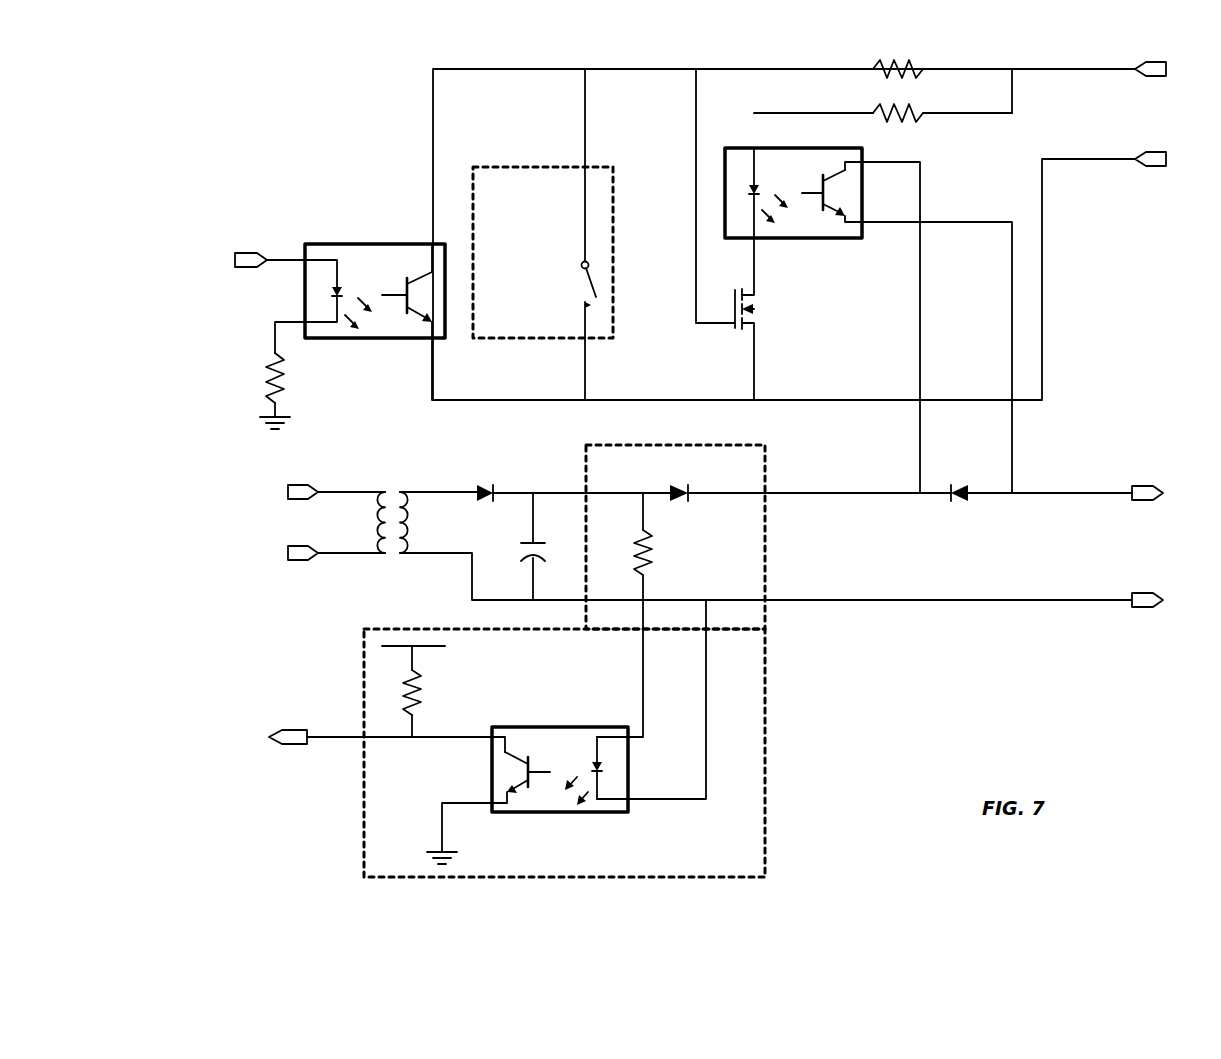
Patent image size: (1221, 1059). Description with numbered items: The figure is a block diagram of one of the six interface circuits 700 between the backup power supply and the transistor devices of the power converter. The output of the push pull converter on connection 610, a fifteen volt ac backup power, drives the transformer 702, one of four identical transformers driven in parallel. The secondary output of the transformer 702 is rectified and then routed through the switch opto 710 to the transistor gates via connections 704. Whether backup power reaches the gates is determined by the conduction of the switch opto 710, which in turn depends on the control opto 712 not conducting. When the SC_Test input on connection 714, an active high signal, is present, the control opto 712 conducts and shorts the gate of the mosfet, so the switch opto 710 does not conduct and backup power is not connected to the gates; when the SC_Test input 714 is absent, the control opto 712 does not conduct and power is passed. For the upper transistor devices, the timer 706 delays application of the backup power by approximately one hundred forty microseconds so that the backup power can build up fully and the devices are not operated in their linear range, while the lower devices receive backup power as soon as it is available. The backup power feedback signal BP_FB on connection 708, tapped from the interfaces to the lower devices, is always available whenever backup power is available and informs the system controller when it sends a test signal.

The interface circuit 700 is at (243, 158).
The SC_Test input 714 is at (245, 250).
The control opto 712 is at (396, 273).
The timer 706 is at (544, 326).
The switch opto 710 is at (804, 176).
The transformer 702 is at (393, 468).
The connection 610 is at (300, 524).
The BP_FB connection 708 is at (293, 727).
The connections 704 is at (1145, 642).